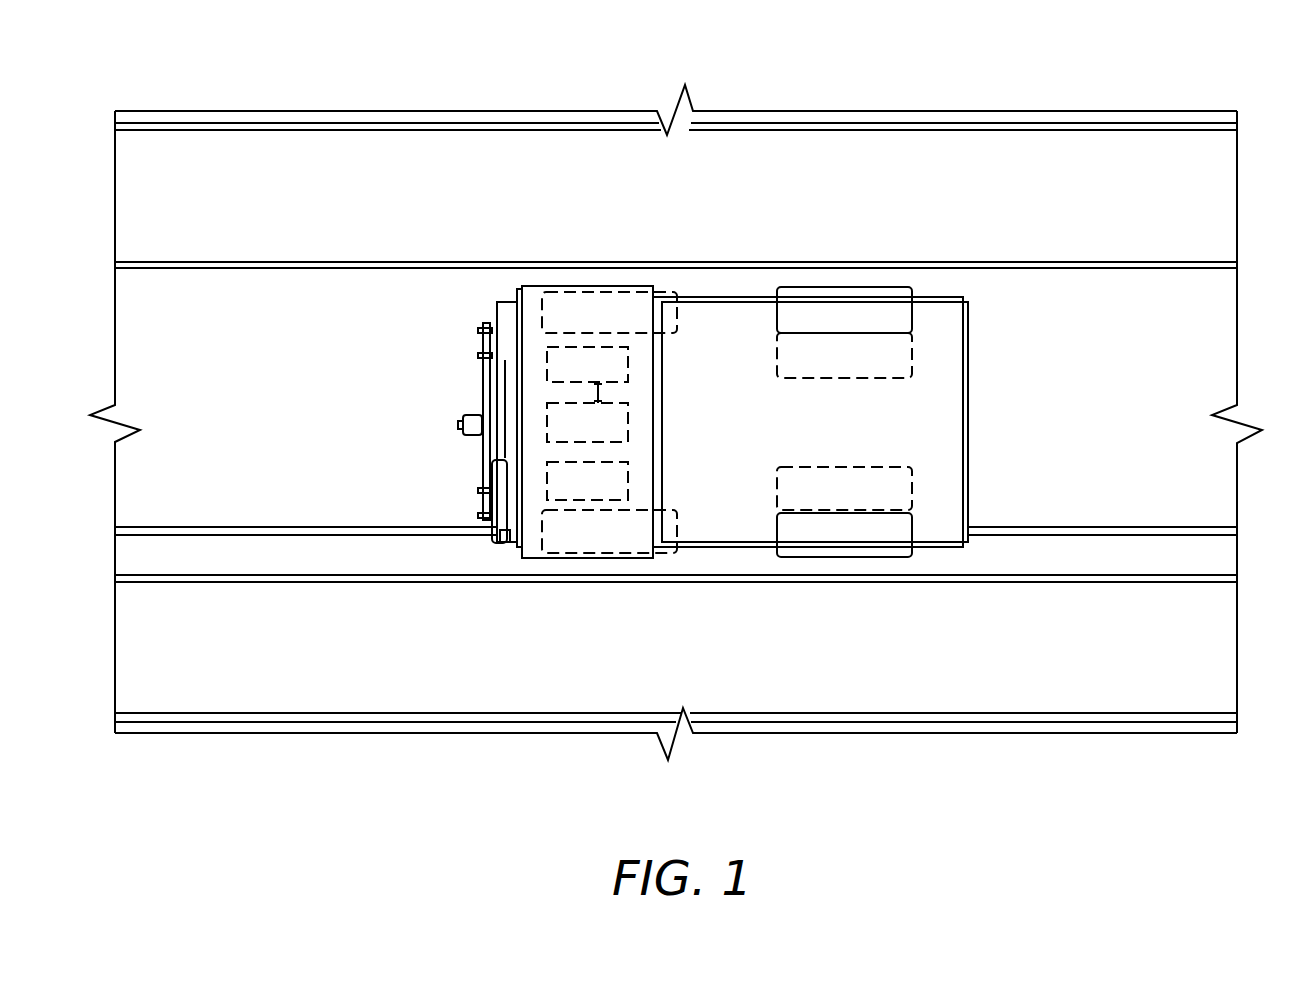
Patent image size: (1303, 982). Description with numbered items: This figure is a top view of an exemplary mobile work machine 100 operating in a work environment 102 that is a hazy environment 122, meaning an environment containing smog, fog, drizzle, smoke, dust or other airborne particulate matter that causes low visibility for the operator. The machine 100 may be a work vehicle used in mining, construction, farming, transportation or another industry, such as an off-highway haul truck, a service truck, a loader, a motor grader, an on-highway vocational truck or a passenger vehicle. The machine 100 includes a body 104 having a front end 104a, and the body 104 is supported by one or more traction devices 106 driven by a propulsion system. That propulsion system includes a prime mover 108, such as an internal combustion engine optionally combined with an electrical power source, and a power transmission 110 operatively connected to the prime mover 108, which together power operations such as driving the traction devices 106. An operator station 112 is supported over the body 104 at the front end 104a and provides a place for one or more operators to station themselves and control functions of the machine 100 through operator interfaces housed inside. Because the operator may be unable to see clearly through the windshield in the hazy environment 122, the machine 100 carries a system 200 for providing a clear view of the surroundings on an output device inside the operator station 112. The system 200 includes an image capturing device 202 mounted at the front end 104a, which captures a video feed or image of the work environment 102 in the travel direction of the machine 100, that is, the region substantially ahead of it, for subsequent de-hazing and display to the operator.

The mobile work machine 100 is at (725, 292).
The work environment 102 is at (214, 208).
The body 104 is at (933, 300).
The front end 104a is at (478, 389).
The traction devices 106 is at (875, 357).
The prime mover 108 is at (571, 374).
The power transmission 110 is at (571, 433).
The operator station 112 is at (530, 487).
The hazy environment 122 is at (1122, 197).
The system 200 is at (571, 492).
The image capturing device 202 is at (466, 437).